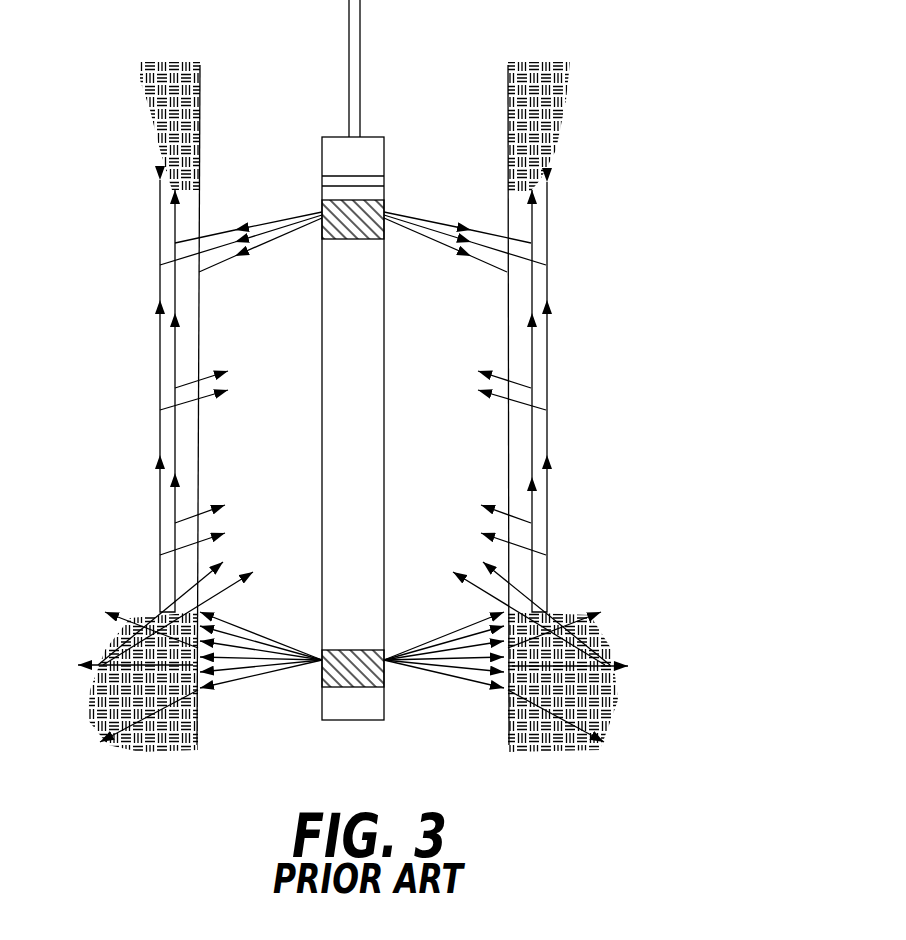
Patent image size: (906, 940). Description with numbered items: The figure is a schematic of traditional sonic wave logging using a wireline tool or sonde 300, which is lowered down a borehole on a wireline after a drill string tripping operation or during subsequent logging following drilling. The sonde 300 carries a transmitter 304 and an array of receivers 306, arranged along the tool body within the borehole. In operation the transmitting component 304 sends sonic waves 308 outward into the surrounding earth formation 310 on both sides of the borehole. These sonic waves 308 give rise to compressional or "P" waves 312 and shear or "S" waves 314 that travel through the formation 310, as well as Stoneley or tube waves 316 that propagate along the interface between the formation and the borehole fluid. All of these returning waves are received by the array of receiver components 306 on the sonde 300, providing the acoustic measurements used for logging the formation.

The wireline tool or sonde 300 is at (338, 353).
The transmitter 304 is at (322, 680).
The array of receivers 306 is at (385, 213).
The sonic waves 308 is at (360, 22).
The earth formation 310 is at (610, 692).
The compressional or "P" waves 312 is at (555, 606).
The shear or "S" waves 314 is at (160, 555).
The Stoneley or tube waves 316 is at (507, 445).